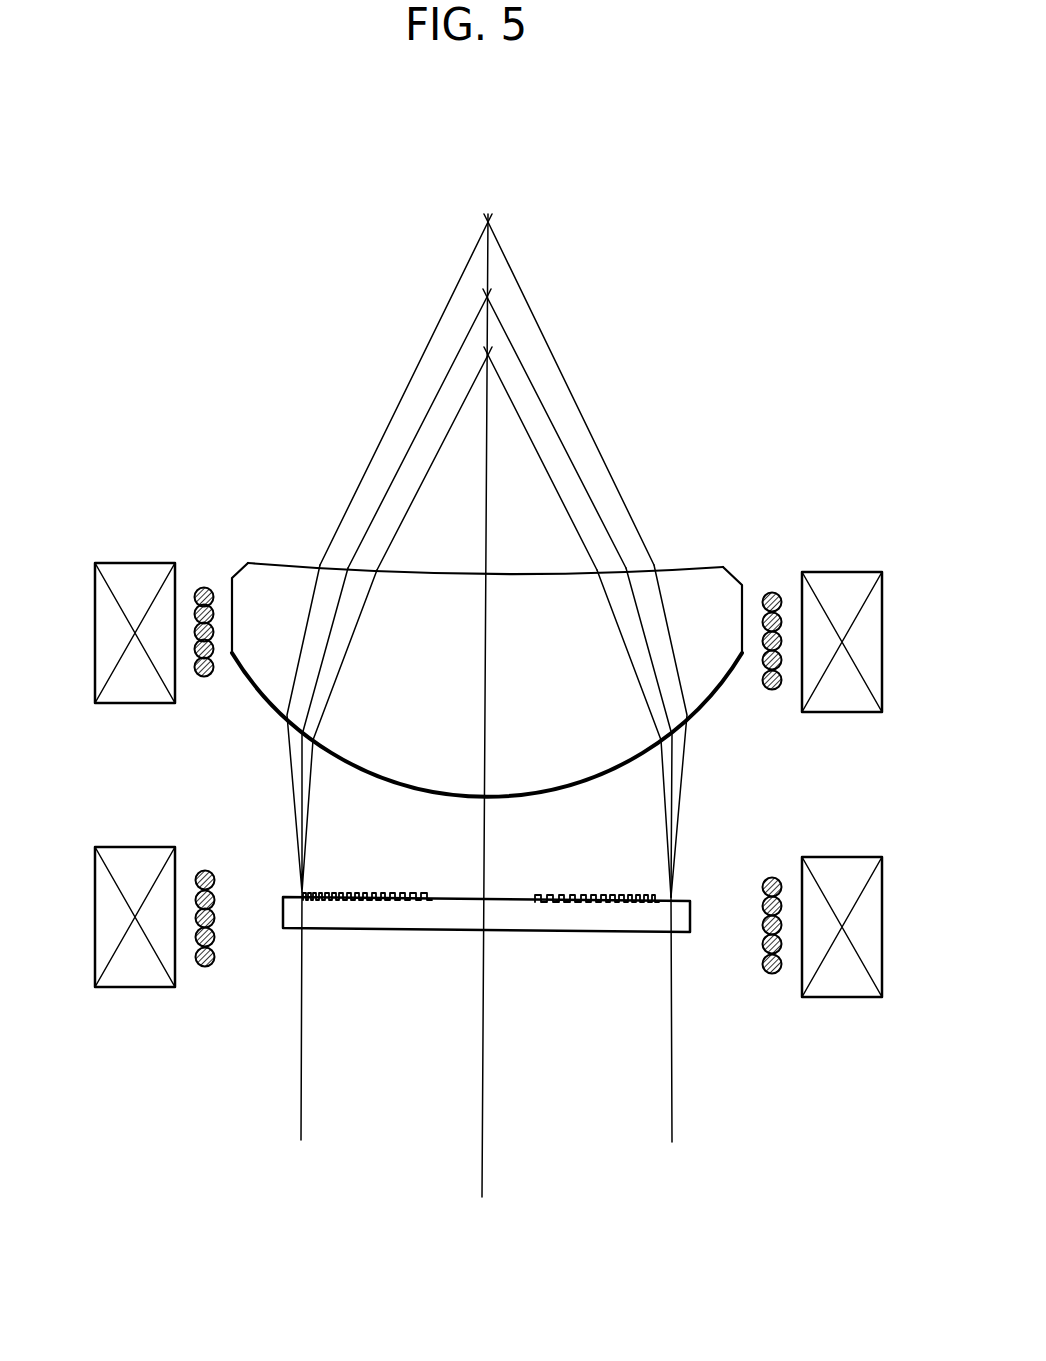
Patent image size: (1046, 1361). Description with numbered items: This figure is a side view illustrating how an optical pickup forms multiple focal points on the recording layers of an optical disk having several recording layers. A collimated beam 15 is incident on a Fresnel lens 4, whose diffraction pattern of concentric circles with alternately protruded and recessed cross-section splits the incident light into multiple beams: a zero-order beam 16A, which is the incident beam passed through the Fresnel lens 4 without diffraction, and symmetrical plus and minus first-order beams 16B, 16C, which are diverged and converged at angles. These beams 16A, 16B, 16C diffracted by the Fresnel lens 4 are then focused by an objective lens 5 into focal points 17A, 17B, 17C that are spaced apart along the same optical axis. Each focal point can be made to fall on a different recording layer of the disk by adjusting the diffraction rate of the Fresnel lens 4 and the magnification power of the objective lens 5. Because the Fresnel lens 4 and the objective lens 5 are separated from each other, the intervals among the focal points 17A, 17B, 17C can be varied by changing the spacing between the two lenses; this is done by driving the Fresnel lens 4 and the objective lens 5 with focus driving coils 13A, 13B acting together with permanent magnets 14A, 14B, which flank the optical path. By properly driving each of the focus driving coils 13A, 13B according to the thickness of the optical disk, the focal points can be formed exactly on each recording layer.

The Fresnel lens 4 is at (431, 922).
The objective lens 5 is at (278, 586).
The focus driving coil 13A is at (203, 868).
The focus driving coil 13B is at (203, 587).
The permanent magnet 14A is at (106, 953).
The permanent magnet 14B is at (95, 598).
The collimated beam 15 is at (298, 985).
The zero-order beam 16A is at (672, 742).
The first-order beam 16B is at (679, 791).
The first-order beam 16C is at (664, 828).
The focal point 17A is at (488, 298).
The focal point 17B is at (489, 223).
The focal point 17C is at (489, 356).